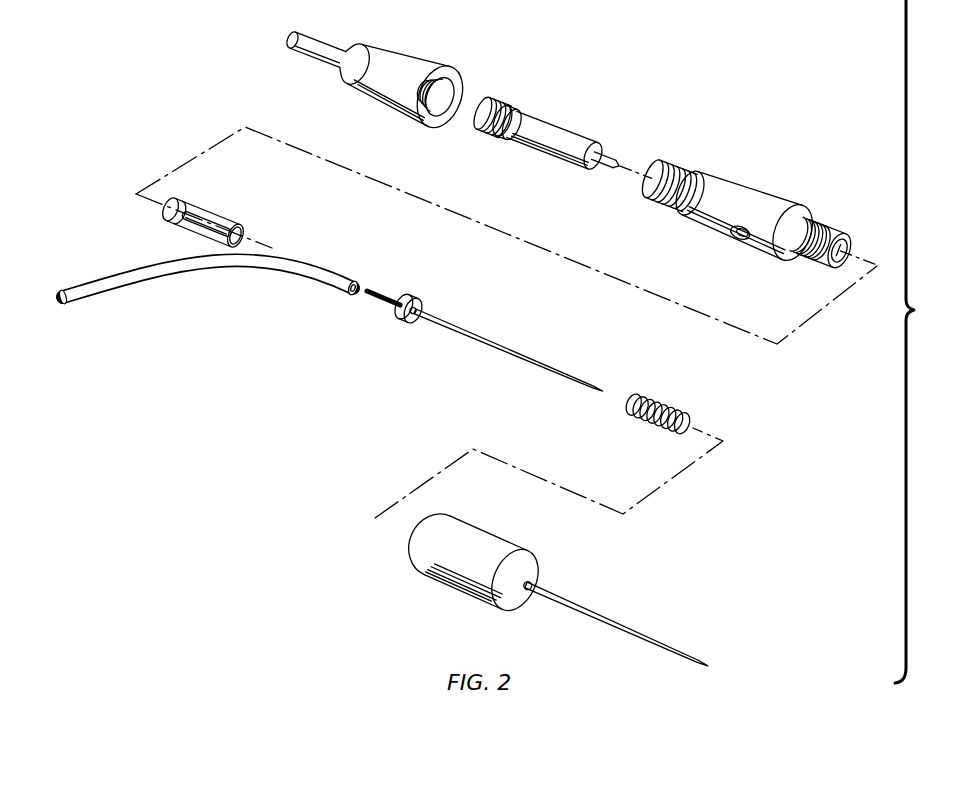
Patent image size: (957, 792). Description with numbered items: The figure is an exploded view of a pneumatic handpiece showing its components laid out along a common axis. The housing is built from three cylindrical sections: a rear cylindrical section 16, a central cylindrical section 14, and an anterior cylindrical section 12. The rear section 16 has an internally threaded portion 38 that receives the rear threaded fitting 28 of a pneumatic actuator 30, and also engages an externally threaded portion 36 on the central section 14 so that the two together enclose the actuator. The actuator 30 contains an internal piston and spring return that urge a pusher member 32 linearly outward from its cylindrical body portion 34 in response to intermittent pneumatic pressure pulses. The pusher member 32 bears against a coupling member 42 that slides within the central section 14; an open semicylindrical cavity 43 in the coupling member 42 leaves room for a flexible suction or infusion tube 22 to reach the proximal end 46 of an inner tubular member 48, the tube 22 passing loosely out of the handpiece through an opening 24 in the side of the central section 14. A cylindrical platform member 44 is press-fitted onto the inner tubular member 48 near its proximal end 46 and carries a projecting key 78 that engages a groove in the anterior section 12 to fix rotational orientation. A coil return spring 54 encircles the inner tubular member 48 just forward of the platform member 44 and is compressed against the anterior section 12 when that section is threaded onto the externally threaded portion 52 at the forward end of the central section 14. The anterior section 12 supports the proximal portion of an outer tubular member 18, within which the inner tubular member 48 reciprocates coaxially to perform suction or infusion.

The anterior cylindrical section 12 is at (510, 548).
The central cylindrical section 14 is at (741, 187).
The rear cylindrical section 16 is at (401, 53).
The outer tubular member 18 is at (622, 623).
The flexible suction or infusion tube 22 is at (210, 270).
The opening 24 is at (731, 243).
The rear threaded fitting 28 is at (500, 103).
The pneumatic actuator 30 is at (521, 153).
The pusher member 32 is at (614, 155).
The cylindrical body portion 34 is at (555, 132).
The externally threaded portion 36 is at (679, 167).
The internally threaded portion 38 is at (447, 109).
The coupling member 42 is at (204, 210).
The open semicylindrical cavity 43 is at (202, 228).
The platform member 44 is at (412, 299).
The proximal end 46 is at (387, 296).
The inner tubular member 48 is at (494, 345).
The externally threaded portion 52 is at (818, 223).
The return spring 54 is at (674, 410).
The projecting key 78 is at (397, 318).